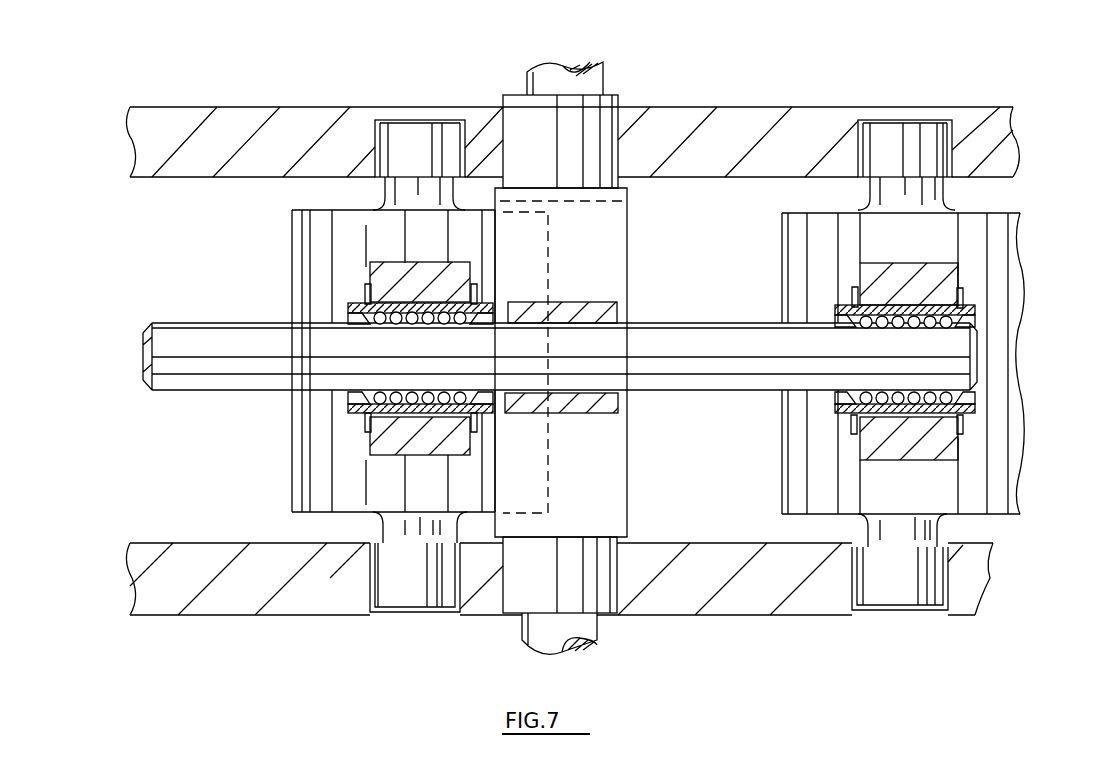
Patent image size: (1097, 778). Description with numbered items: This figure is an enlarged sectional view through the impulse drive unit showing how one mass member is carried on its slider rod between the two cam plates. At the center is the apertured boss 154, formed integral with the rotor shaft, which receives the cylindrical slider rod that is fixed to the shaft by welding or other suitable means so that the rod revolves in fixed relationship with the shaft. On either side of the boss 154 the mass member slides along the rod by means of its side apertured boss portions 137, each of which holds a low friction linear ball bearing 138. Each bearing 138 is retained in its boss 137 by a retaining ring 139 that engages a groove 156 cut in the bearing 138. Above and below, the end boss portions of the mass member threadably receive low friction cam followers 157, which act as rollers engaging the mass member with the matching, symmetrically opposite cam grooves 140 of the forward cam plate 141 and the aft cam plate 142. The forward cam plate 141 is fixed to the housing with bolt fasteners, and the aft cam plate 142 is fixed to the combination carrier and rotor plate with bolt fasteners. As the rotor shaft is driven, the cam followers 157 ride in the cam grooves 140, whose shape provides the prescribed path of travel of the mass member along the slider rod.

The side apertured boss portion 137 is at (372, 462).
The low friction linear ball bearing 138 is at (493, 302).
The retaining ring 139 is at (366, 294).
The cam groove 140 is at (417, 610).
The forward cam plate 141 is at (240, 178).
The aft cam plate 142 is at (142, 543).
The apertured boss 154 is at (598, 300).
The groove 156 is at (362, 418).
The low friction cam follower 157 is at (374, 130).